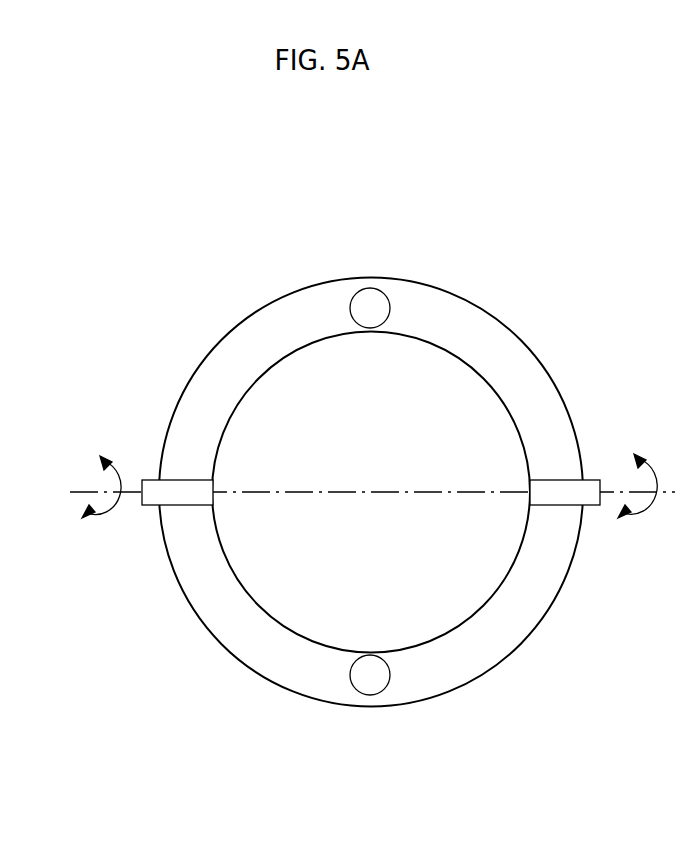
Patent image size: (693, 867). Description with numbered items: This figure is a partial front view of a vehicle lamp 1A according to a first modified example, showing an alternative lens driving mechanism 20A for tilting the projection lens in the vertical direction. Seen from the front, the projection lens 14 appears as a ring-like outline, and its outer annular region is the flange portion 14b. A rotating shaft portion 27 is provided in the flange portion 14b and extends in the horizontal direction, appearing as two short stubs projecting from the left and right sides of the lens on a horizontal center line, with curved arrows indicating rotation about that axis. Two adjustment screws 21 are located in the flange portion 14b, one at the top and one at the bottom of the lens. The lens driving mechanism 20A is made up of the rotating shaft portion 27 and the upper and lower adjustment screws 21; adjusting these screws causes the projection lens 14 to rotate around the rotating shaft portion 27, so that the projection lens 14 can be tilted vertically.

The vehicle lamp 1A is at (481, 250).
The projection lens 14 is at (256, 305).
The flange portion 14b is at (499, 350).
The lens driving mechanism 20A is at (210, 668).
The adjustment screw 21 is at (370, 288).
The rotating shaft portion 27 is at (548, 506).